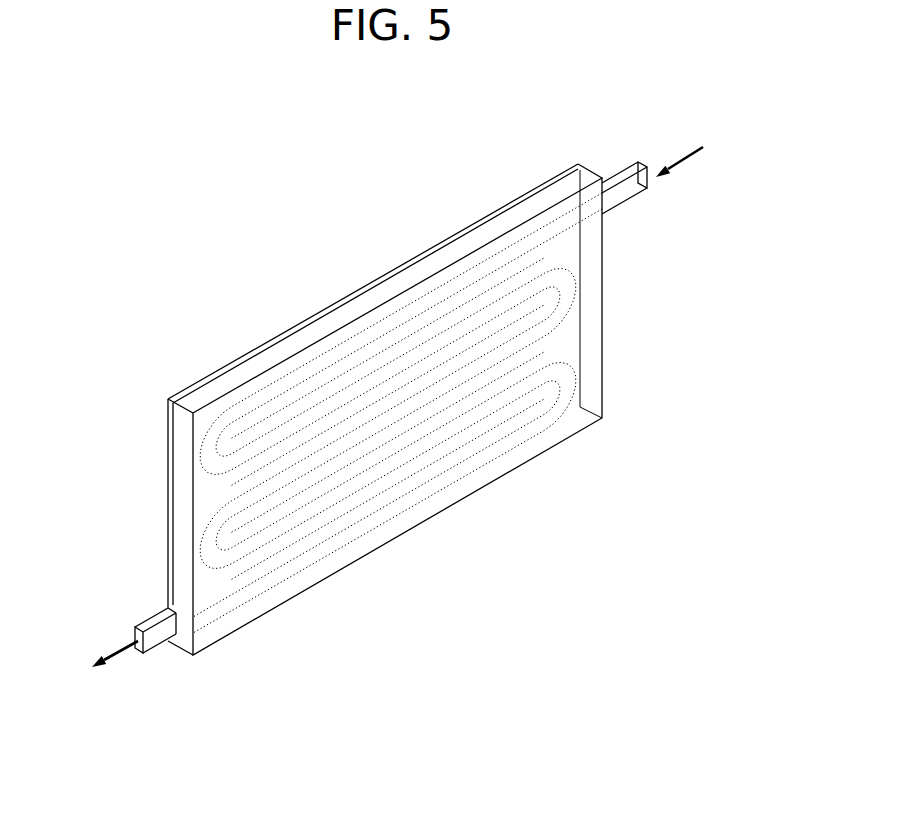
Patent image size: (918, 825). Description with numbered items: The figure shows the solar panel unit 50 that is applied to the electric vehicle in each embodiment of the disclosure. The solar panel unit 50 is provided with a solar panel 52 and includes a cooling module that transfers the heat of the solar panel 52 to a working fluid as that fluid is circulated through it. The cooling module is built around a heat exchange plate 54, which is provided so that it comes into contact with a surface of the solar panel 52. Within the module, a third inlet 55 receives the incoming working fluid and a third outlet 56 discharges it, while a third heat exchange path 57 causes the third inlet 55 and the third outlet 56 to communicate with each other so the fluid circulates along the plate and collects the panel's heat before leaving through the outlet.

The solar panel unit 50 is at (102, 181).
The solar panel 52 is at (310, 316).
The heat exchange plate 54 is at (233, 388).
The third inlet 55 is at (622, 171).
The third outlet 56 is at (157, 645).
The third heat exchange path 57 is at (405, 458).